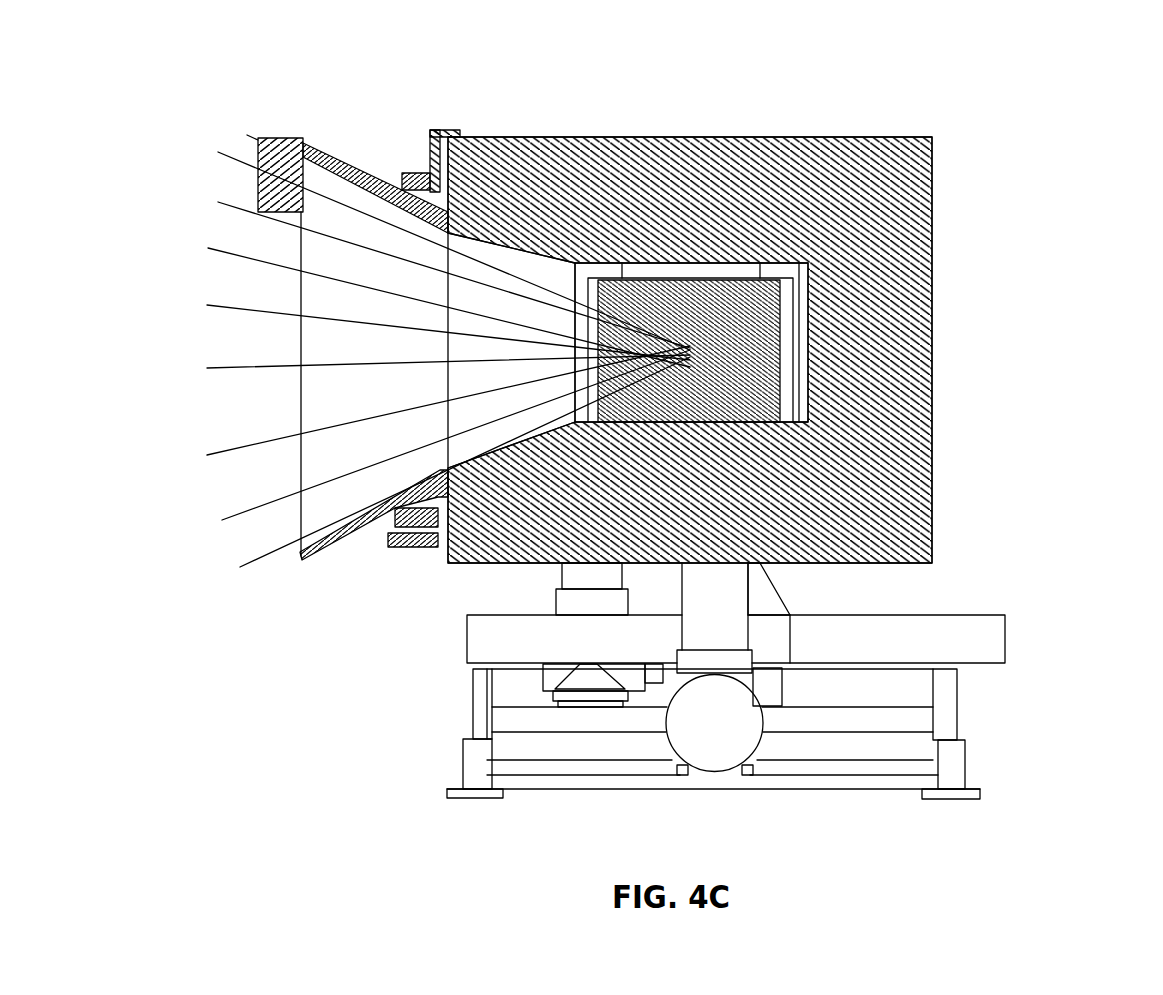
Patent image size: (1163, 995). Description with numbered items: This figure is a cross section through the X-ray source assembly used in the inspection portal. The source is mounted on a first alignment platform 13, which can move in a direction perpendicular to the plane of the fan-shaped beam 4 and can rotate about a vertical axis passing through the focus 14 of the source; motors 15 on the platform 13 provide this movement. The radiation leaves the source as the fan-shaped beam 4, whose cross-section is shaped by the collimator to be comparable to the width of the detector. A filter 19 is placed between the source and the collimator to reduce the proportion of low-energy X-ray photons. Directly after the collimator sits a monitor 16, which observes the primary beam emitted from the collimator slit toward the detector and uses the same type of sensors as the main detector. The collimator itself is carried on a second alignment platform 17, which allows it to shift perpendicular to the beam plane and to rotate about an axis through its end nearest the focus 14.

The fan-shaped beam 4 is at (320, 388).
The first alignment platform 13 is at (852, 652).
The focus 14 is at (690, 350).
The motors 15 is at (563, 589).
The monitor 16 is at (287, 138).
The second alignment platform 17 is at (395, 548).
The filter 19 is at (653, 280).